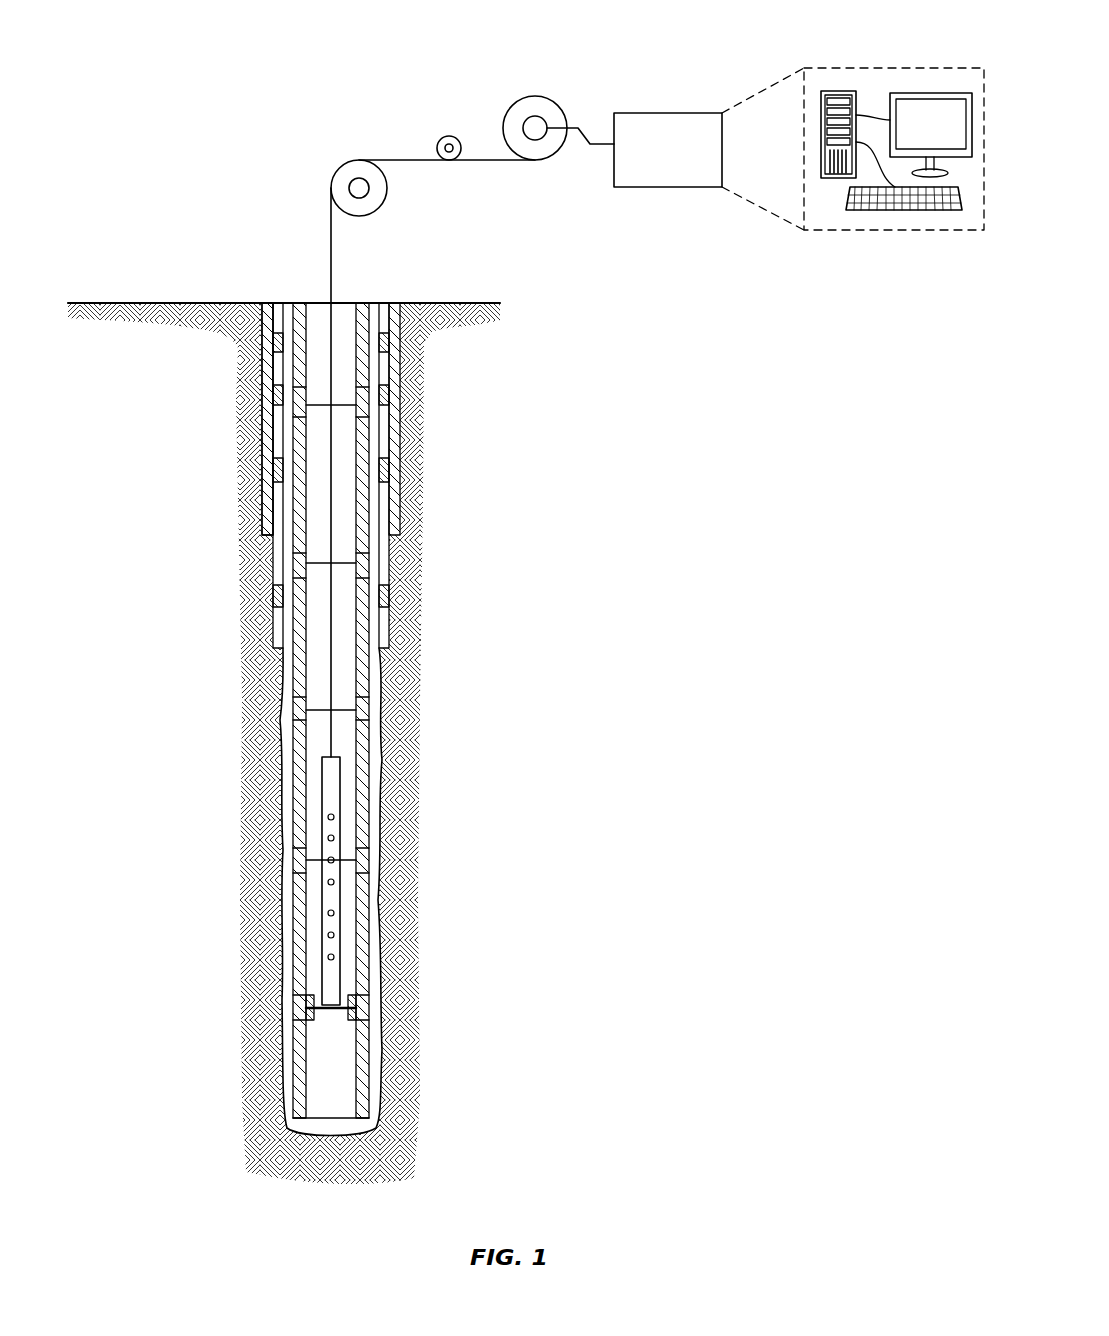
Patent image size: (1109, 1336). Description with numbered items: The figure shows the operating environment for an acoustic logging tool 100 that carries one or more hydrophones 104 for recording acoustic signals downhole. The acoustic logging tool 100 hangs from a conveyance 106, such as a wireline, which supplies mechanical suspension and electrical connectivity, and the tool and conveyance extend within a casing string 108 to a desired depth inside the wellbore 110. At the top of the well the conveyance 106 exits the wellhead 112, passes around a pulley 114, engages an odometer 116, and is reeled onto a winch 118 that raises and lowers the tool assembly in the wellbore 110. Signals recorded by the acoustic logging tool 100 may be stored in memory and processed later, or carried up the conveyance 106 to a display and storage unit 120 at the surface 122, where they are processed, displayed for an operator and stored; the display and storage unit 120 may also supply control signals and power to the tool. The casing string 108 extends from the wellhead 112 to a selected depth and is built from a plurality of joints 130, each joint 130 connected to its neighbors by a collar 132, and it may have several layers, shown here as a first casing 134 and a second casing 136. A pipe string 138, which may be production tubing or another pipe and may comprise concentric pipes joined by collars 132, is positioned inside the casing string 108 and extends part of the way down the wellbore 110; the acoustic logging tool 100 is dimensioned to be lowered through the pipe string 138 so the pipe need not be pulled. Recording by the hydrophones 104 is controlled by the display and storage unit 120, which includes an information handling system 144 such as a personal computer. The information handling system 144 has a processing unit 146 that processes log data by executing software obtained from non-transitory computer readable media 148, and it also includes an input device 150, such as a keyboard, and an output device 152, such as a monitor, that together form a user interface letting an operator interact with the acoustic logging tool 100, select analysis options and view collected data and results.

The acoustic logging tool 100 is at (330, 993).
The hydrophone 104 is at (333, 838).
The conveyance 106 is at (332, 263).
The casing string 108 is at (248, 524).
The wellbore 110 is at (385, 655).
The wellhead 112 is at (317, 292).
The pulley 114 is at (333, 176).
The odometer 116 is at (449, 135).
The winch 118 is at (548, 100).
The display and storage unit 120 is at (676, 113).
The surface 122 is at (108, 302).
The joint 130 is at (273, 557).
The collar 132 is at (277, 597).
The first casing 134 is at (388, 562).
The second casing 136 is at (398, 513).
The pipe string 138 is at (369, 1075).
The information handling system 144 is at (878, 66).
The processing unit 146 is at (876, 164).
The non-transitory computer readable media 148 is at (838, 91).
The input device 150 is at (831, 192).
The output device 152 is at (930, 92).